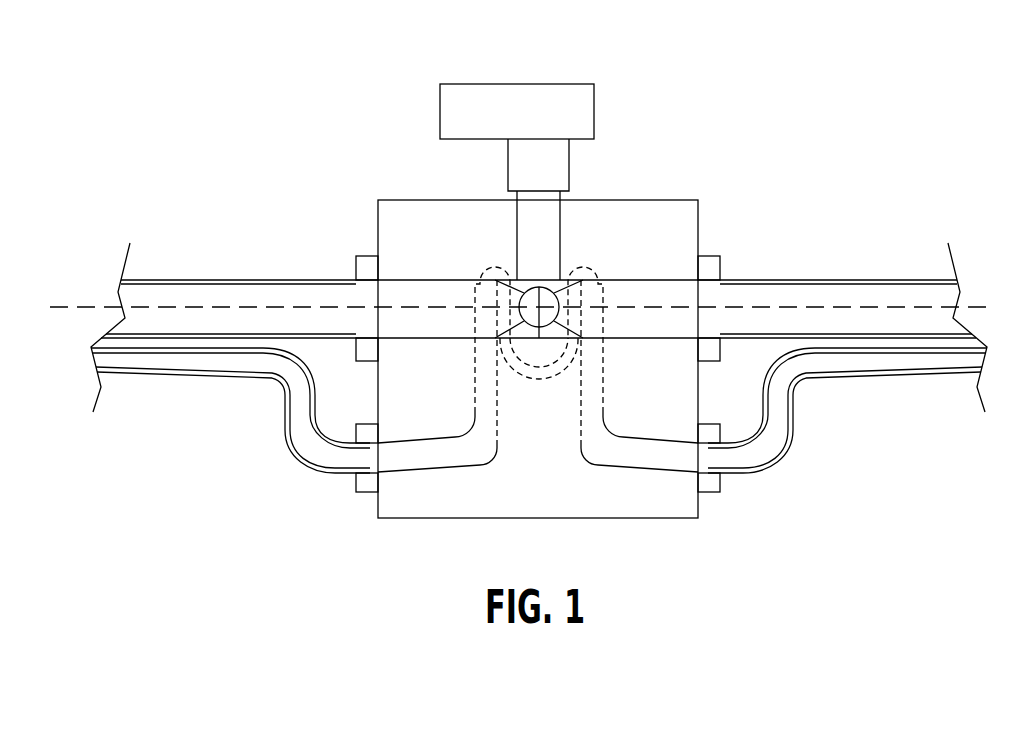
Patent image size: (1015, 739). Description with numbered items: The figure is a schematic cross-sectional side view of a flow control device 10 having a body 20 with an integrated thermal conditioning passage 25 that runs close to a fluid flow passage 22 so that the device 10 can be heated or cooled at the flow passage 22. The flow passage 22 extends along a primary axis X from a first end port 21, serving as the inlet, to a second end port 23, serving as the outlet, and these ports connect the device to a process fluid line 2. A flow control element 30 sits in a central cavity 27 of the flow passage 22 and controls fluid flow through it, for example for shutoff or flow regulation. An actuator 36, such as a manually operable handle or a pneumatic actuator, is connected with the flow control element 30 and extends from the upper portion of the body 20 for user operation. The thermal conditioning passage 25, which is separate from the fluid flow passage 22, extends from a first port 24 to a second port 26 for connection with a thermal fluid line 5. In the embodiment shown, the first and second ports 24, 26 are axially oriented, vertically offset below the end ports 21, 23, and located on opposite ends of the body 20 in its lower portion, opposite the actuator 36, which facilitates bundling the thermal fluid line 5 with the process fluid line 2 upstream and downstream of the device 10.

The flow control device 10 is at (334, 507).
The process fluid line 2 is at (223, 280).
The primary axis X is at (846, 307).
The thermal fluid line 5 is at (173, 376).
The body 20 is at (661, 215).
The first end port 21 is at (363, 337).
The fluid flow passage 22 is at (470, 287).
The second end port 23 is at (712, 272).
The first port 24 is at (370, 470).
The thermal conditioning passage 25 is at (603, 362).
The second port 26 is at (705, 443).
The central cavity 27 is at (539, 287).
The flow control element 30 is at (546, 288).
The actuator 36 is at (568, 98).